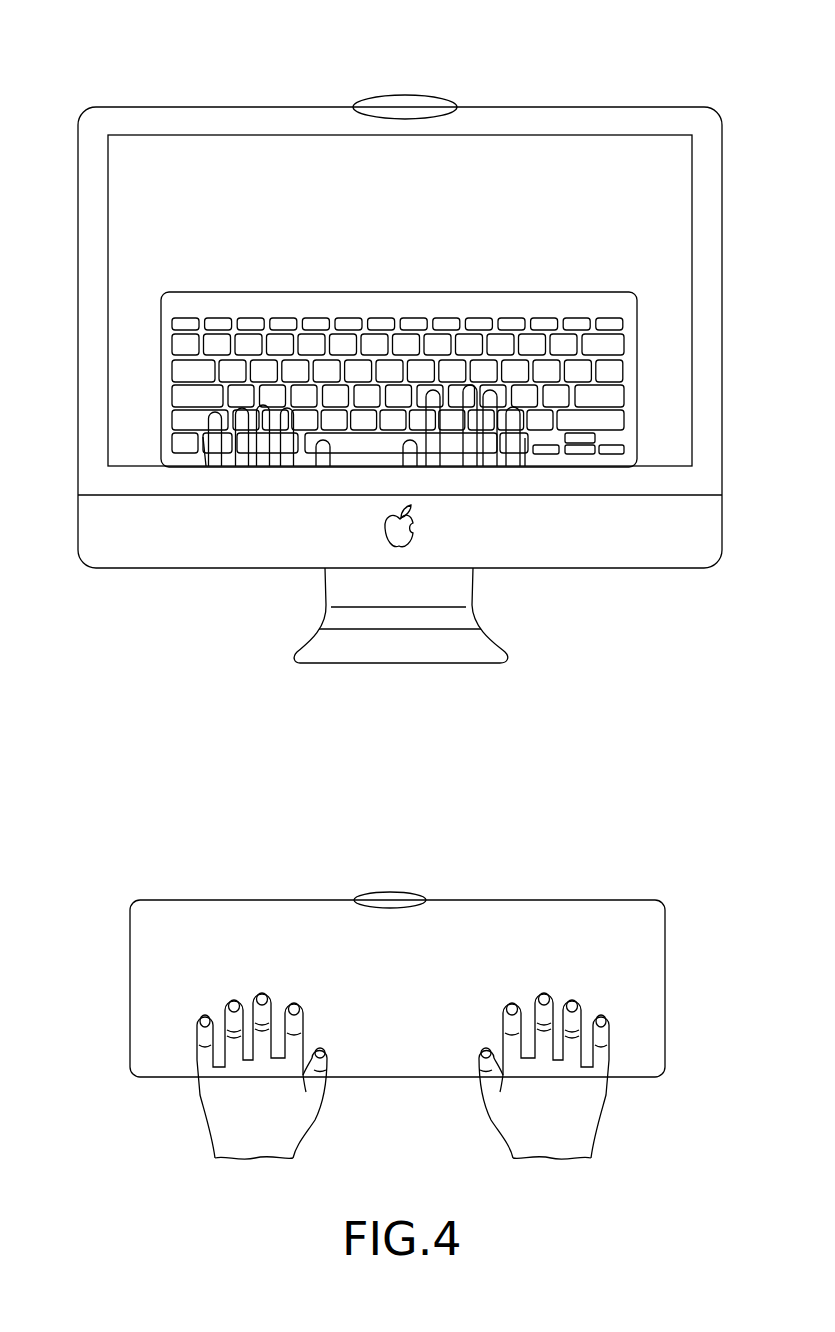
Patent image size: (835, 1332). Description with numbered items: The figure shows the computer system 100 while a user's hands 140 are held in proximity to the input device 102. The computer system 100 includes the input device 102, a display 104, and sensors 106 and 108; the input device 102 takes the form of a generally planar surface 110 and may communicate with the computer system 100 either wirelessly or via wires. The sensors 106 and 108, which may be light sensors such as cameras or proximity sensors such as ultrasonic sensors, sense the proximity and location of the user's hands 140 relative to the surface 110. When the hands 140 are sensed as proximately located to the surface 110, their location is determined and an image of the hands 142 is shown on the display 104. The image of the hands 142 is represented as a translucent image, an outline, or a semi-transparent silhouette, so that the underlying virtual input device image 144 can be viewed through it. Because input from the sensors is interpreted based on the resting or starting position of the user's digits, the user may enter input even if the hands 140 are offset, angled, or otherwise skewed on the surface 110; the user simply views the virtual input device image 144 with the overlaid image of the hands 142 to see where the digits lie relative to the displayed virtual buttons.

The computer system 100 is at (700, 67).
The input device 102 is at (665, 960).
The display 104 is at (692, 350).
The sensor 106 is at (415, 880).
The sensor 108 is at (447, 89).
The planar surface 110 is at (582, 908).
The user's hands 140 is at (200, 1108).
The image of the hands 142 is at (210, 462).
The virtual input device image 144 is at (568, 293).